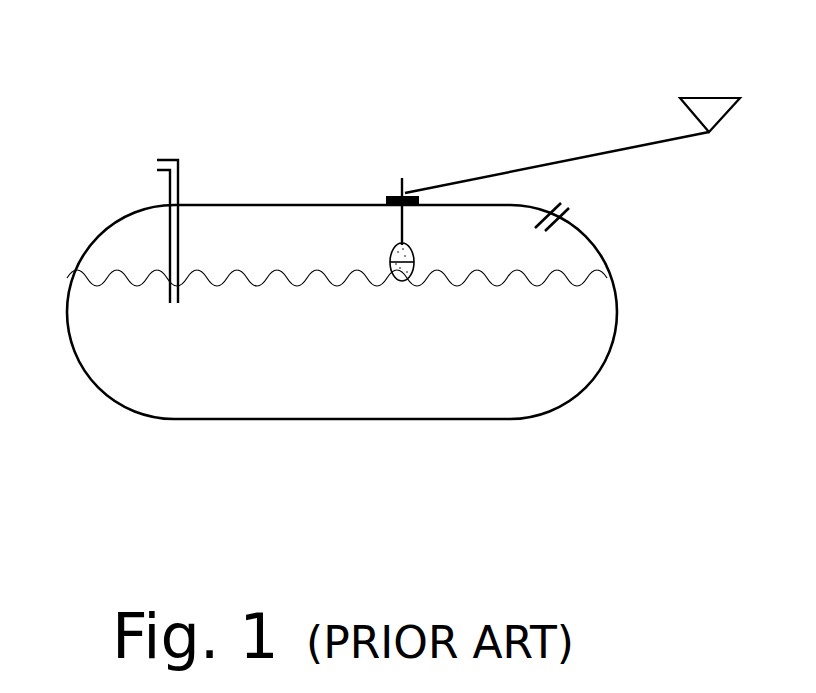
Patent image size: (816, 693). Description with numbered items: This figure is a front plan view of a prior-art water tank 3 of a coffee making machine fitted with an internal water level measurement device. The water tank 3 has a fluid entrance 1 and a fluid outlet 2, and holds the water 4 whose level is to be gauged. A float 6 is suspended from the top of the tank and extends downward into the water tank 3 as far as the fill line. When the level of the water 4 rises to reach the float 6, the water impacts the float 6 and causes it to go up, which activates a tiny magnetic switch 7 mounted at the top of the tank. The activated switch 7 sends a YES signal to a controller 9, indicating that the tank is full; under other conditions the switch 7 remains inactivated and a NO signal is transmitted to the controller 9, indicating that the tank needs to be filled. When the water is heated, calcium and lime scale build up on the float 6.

The fluid entrance 1 is at (571, 201).
The fluid outlet 2 is at (156, 160).
The water tank 3 is at (84, 247).
The water 4 is at (522, 355).
The float 6 is at (405, 181).
The magnetic switch 7 is at (388, 194).
The controller 9 is at (715, 95).